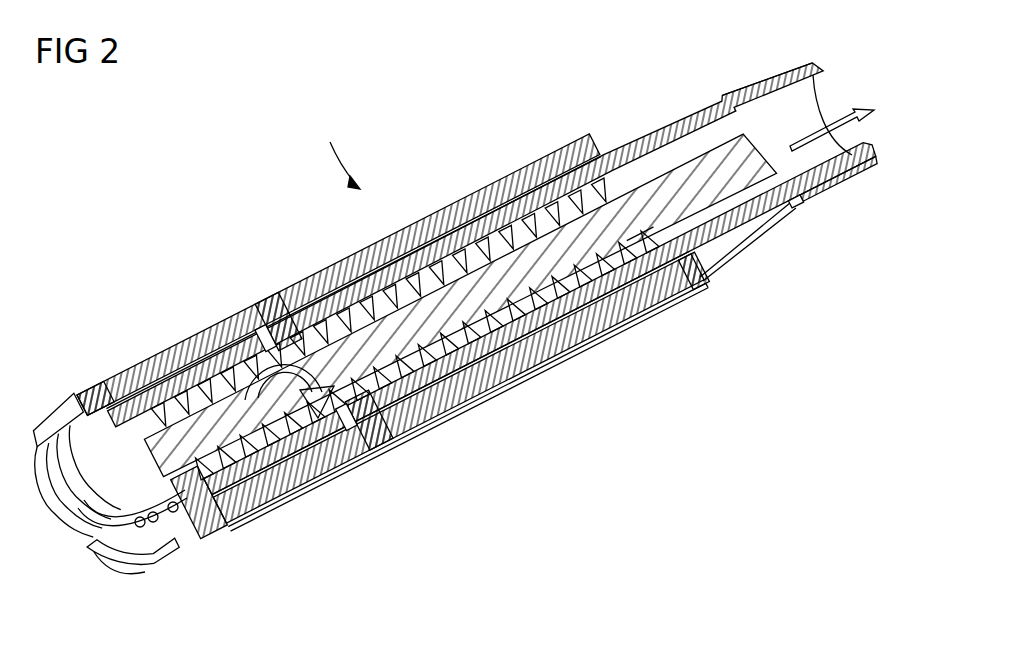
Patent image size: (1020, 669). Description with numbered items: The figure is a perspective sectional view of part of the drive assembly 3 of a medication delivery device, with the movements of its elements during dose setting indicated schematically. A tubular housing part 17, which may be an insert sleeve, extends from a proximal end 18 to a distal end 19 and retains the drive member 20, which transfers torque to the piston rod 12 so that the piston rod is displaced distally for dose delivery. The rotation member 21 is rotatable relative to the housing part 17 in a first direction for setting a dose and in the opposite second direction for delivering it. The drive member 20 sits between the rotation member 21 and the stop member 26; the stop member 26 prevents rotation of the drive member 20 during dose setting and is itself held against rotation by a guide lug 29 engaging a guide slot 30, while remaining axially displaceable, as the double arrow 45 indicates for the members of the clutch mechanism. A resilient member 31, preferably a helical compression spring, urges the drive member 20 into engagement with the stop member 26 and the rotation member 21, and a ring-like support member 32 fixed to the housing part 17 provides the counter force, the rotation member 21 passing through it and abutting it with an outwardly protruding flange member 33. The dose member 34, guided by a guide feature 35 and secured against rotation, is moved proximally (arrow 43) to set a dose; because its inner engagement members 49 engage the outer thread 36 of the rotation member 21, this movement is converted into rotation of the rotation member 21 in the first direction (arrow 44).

The drive assembly 3 is at (339, 153).
The piston rod 12 is at (660, 133).
The housing part 17 is at (503, 367).
The proximal end 18 is at (702, 280).
The distal end 19 is at (114, 575).
The drive member 20 is at (195, 350).
The rotation member 21 is at (446, 342).
The stop member 26 is at (186, 472).
The guide lug 29 is at (95, 385).
The guide slot 30 is at (58, 415).
The resilient member 31 is at (92, 534).
The support member 32 is at (288, 308).
The protruding member 33 is at (248, 322).
The dose member 34 is at (785, 86).
The guide feature 35 is at (775, 236).
The thread 36 is at (612, 265).
The arrow 43 is at (836, 118).
The arrow 44 is at (289, 391).
The double arrow 45 is at (163, 362).
The engagement member 49 is at (315, 292).